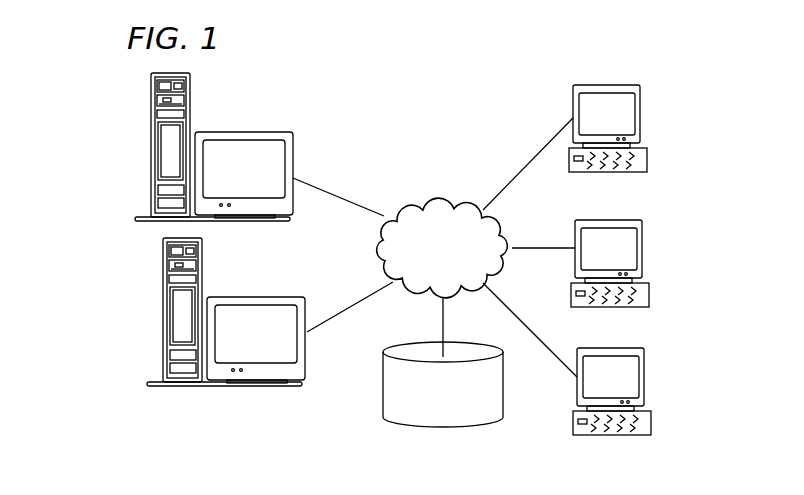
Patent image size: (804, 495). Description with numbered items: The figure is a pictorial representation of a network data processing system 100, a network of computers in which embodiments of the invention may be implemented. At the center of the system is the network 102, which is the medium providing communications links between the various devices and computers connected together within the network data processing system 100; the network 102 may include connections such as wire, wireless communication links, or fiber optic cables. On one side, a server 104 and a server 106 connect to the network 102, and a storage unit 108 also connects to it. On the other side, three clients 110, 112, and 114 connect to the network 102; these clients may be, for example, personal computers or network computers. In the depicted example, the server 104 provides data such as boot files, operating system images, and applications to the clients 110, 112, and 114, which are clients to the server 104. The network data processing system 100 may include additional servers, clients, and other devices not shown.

The network data processing system 100 is at (490, 94).
The network 102 is at (414, 206).
The server 104 is at (152, 148).
The server 106 is at (163, 311).
The storage unit 108 is at (428, 426).
The client 110 is at (640, 114).
The client 112 is at (643, 247).
The client 114 is at (645, 377).